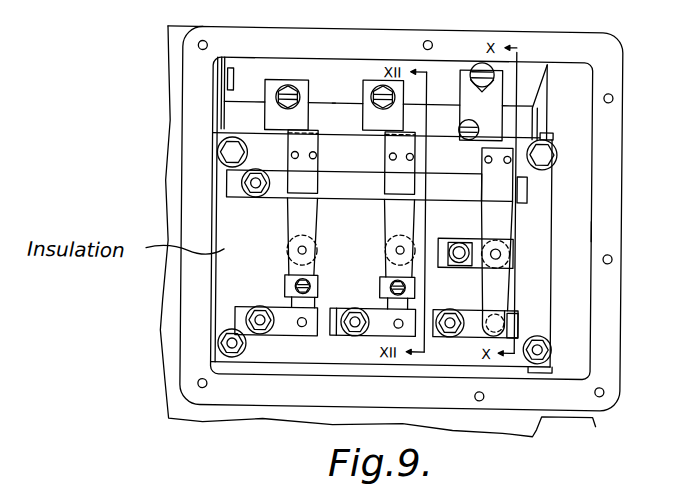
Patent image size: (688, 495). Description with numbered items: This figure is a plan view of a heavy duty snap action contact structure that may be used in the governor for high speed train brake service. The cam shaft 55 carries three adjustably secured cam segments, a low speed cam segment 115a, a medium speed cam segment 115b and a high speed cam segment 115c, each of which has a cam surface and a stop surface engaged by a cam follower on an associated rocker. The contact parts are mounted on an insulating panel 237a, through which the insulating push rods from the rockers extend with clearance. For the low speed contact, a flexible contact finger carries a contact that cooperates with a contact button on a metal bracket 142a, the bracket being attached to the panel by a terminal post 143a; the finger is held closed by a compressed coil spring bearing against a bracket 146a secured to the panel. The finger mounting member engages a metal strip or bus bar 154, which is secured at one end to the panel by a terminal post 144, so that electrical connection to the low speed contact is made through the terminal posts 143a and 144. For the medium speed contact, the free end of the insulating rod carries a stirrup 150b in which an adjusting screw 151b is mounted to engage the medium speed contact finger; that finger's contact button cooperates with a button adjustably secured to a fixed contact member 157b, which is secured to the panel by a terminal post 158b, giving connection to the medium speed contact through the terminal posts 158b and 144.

The low speed cam segment 115a is at (462, 65).
The medium speed cam segment 115b is at (366, 79).
The high speed cam segment 115c is at (276, 76).
The cam shaft 55 is at (342, 86).
The bus bar 154 is at (350, 172).
The terminal post 144 is at (258, 196).
The fixed contact member 157b is at (333, 306).
The stirrup 150b is at (384, 278).
The adjusting screw 151b is at (385, 293).
The terminal post 158b is at (344, 333).
The bracket 146a is at (450, 227).
The terminal post 143a is at (452, 305).
The metal bracket 142a is at (516, 314).
The insulating panel 237a is at (553, 224).